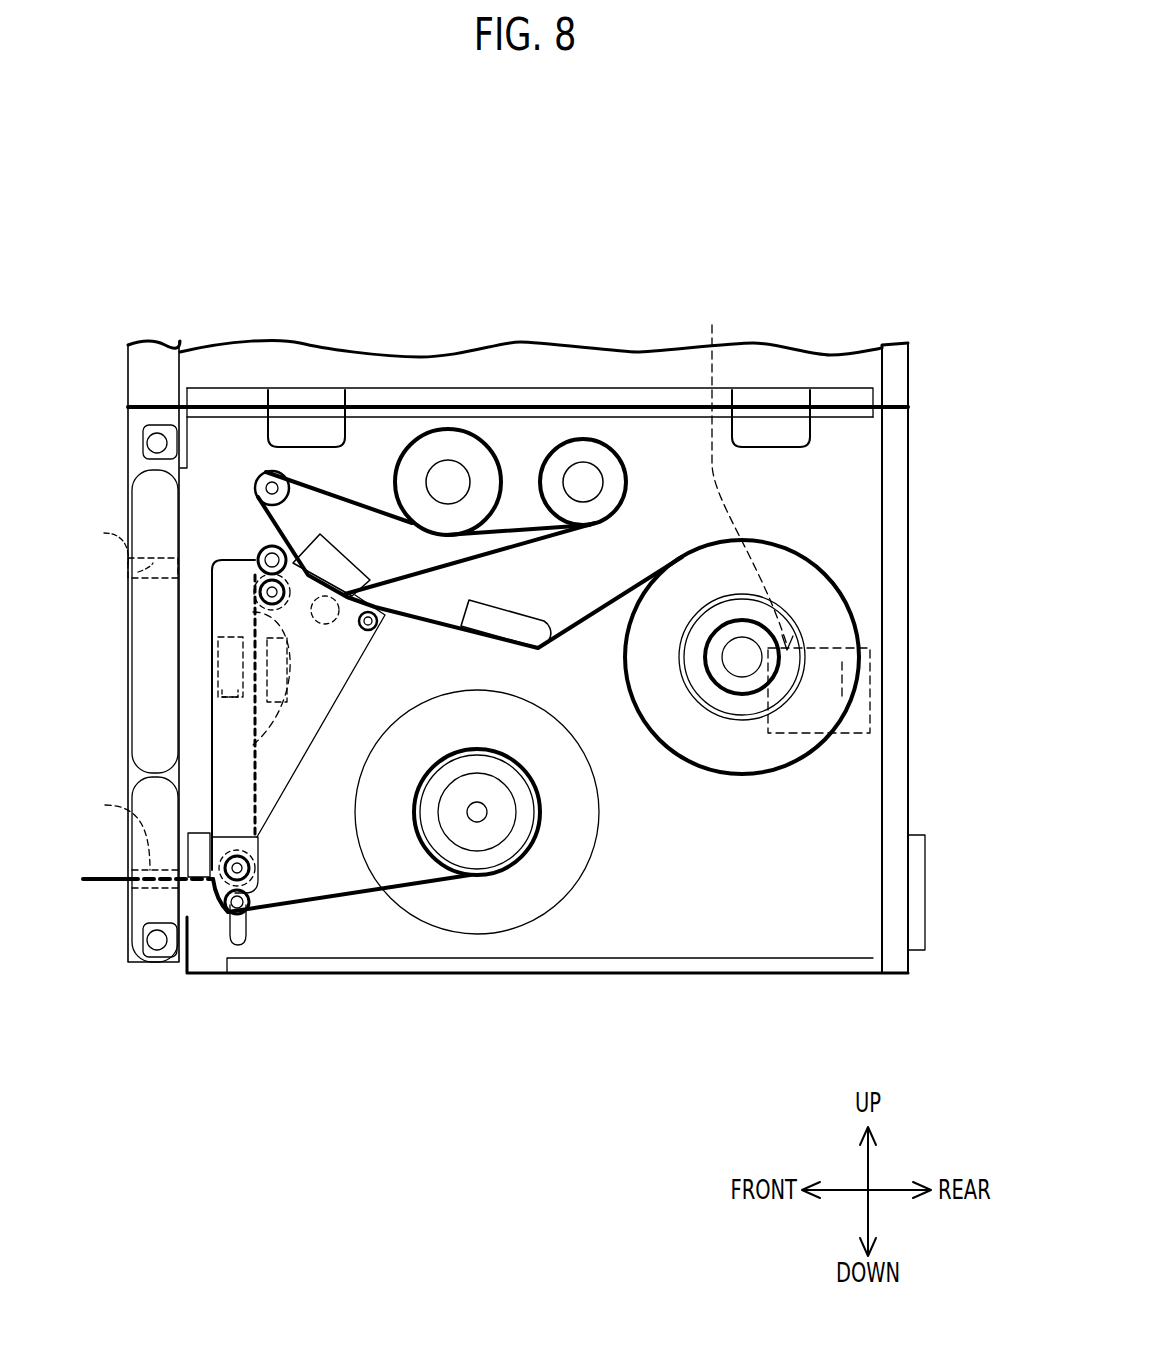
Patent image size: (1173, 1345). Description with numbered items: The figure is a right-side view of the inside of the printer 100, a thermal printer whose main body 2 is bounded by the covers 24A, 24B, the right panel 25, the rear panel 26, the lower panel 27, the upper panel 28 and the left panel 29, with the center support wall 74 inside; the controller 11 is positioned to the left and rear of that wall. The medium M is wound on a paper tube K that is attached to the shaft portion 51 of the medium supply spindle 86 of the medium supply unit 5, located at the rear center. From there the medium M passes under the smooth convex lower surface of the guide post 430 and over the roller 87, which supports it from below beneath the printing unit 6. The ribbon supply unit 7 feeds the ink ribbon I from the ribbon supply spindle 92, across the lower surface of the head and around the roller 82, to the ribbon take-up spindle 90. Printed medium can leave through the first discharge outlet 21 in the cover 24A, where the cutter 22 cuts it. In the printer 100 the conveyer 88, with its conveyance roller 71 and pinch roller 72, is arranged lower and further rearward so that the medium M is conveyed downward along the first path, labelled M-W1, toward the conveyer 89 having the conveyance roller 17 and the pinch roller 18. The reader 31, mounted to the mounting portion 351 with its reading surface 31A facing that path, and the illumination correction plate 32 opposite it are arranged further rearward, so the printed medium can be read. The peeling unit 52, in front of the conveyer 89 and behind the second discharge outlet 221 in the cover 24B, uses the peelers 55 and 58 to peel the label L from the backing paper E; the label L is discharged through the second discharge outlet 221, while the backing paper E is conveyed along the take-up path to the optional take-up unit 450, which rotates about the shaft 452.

The printer 100 is at (522, 185).
The main body 2 is at (794, 302).
The right panel 25 is at (628, 370).
The ribbon supply unit 7 is at (542, 418).
The cover 24A is at (150, 662).
The cover 24B is at (160, 902).
The first discharge outlet 21 is at (132, 575).
The cutter 22 is at (102, 539).
The rear panel 26 is at (908, 575).
The lower panel 27 is at (790, 975).
The upper panel 28 is at (825, 440).
The left panel 29 is at (818, 470).
The medium supply unit 5 is at (813, 550).
The medium supply spindle 86 is at (813, 613).
The shaft portion 51 is at (742, 657).
The paper tube K is at (787, 712).
The controller 11 is at (746, 474).
The center support wall 74 is at (672, 847).
The ribbon take-up spindle 90 is at (458, 430).
The ribbon supply spindle 92 is at (611, 447).
The roller 82 is at (270, 470).
The conveyance roller 71 is at (258, 556).
The conveyer 88 is at (250, 560).
The pinch roller 72 is at (258, 590).
The printing unit 6 is at (325, 542).
The ink ribbon I is at (555, 537).
The medium M is at (572, 645).
The guide post 430 is at (503, 627).
The shaft 452 is at (480, 815).
The take-up unit 450 is at (500, 850).
The roller 87 is at (371, 632).
The conveyance roller 17 is at (237, 856).
The peeler 55 is at (200, 858).
The peeler 58 is at (222, 905).
The peeling unit 52 is at (203, 905).
The pinch roller 18 is at (255, 915).
The conveyer 89 is at (273, 874).
The backing paper E is at (343, 897).
The label L is at (102, 877).
The second discharge outlet 221 is at (109, 828).
The reader 31 is at (240, 653).
The reading surface 31A is at (253, 715).
The illumination correction plate 32 is at (253, 612).
The mounting portion 351 is at (227, 693).
The medium on first path M-W1 is at (268, 730).